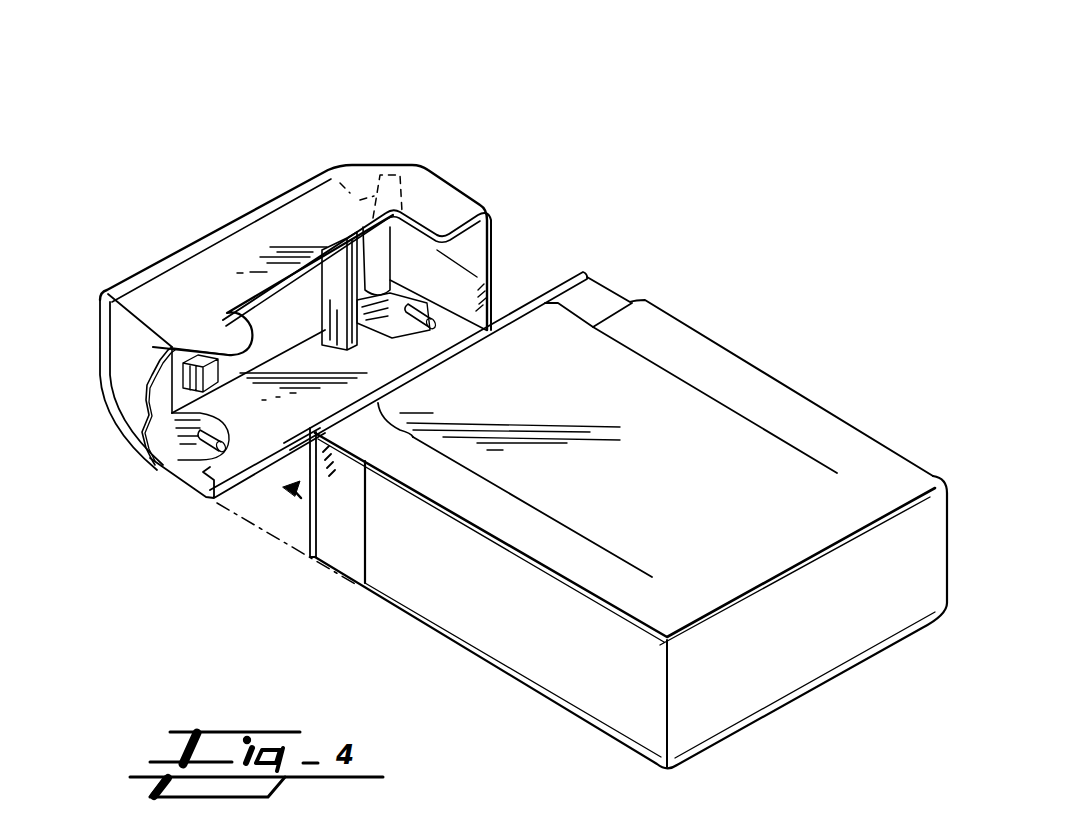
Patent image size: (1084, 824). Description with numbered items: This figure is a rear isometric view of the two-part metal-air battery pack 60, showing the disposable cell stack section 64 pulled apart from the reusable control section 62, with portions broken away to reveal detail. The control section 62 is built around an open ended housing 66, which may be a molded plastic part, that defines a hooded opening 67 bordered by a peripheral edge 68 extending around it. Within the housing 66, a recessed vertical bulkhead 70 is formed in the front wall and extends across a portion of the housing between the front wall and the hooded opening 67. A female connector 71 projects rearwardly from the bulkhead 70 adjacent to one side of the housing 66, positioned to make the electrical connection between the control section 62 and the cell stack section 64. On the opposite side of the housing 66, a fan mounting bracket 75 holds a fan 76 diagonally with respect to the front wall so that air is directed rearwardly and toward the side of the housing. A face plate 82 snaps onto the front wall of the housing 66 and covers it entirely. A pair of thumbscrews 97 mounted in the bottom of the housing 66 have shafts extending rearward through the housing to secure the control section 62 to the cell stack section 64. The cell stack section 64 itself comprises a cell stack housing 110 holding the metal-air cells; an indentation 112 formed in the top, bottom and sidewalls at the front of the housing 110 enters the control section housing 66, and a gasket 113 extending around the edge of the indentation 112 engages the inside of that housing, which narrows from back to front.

The metal-air battery pack 60 is at (772, 336).
The control section 62 is at (452, 176).
The cell stack section 64 is at (817, 400).
The housing 66 is at (136, 422).
The hooded opening 67 is at (478, 275).
The peripheral edge 68 is at (493, 228).
The recessed vertical bulkhead 70 is at (262, 308).
The female connector 71 is at (200, 348).
The fan mounting bracket 75 is at (343, 240).
The fan 76 is at (377, 198).
The face plate 82 is at (100, 343).
The thumbscrews 97 is at (427, 327).
The cell stack housing 110 is at (720, 533).
The indentation 112 is at (620, 293).
The gasket 113 is at (566, 280).